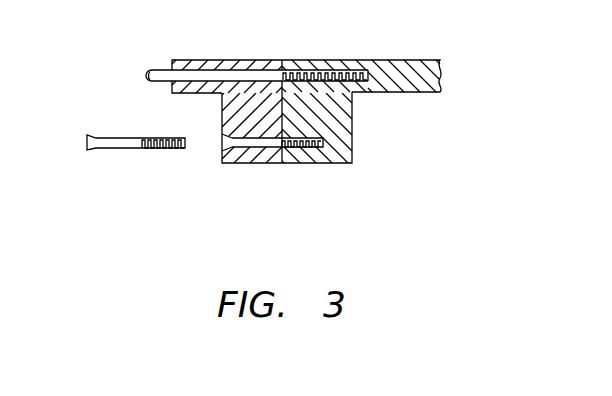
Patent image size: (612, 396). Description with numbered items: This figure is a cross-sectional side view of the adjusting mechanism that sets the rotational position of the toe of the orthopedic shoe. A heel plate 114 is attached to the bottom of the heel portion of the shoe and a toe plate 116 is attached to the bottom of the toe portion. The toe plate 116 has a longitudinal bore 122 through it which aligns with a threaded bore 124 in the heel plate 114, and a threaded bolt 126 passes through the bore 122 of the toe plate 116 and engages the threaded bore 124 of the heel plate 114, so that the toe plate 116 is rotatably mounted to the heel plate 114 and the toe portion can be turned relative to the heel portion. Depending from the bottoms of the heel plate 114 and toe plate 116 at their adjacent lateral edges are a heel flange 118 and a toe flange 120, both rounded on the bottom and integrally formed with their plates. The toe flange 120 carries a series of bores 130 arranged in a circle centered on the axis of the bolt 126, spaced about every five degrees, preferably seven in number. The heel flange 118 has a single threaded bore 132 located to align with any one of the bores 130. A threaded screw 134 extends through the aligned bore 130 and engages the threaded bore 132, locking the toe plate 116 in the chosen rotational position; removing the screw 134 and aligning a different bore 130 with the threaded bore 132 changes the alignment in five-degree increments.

The heel plate 114 is at (428, 92).
The toe plate 116 is at (188, 94).
The heel flange 118 is at (352, 140).
The toe flange 120 is at (233, 163).
The longitudinal bore 122 is at (228, 60).
The threaded bore 124 is at (343, 60).
The threaded bolt 126 is at (157, 72).
The bores 130 is at (260, 163).
The threaded bore 132 is at (305, 163).
The threaded screw 134 is at (117, 148).